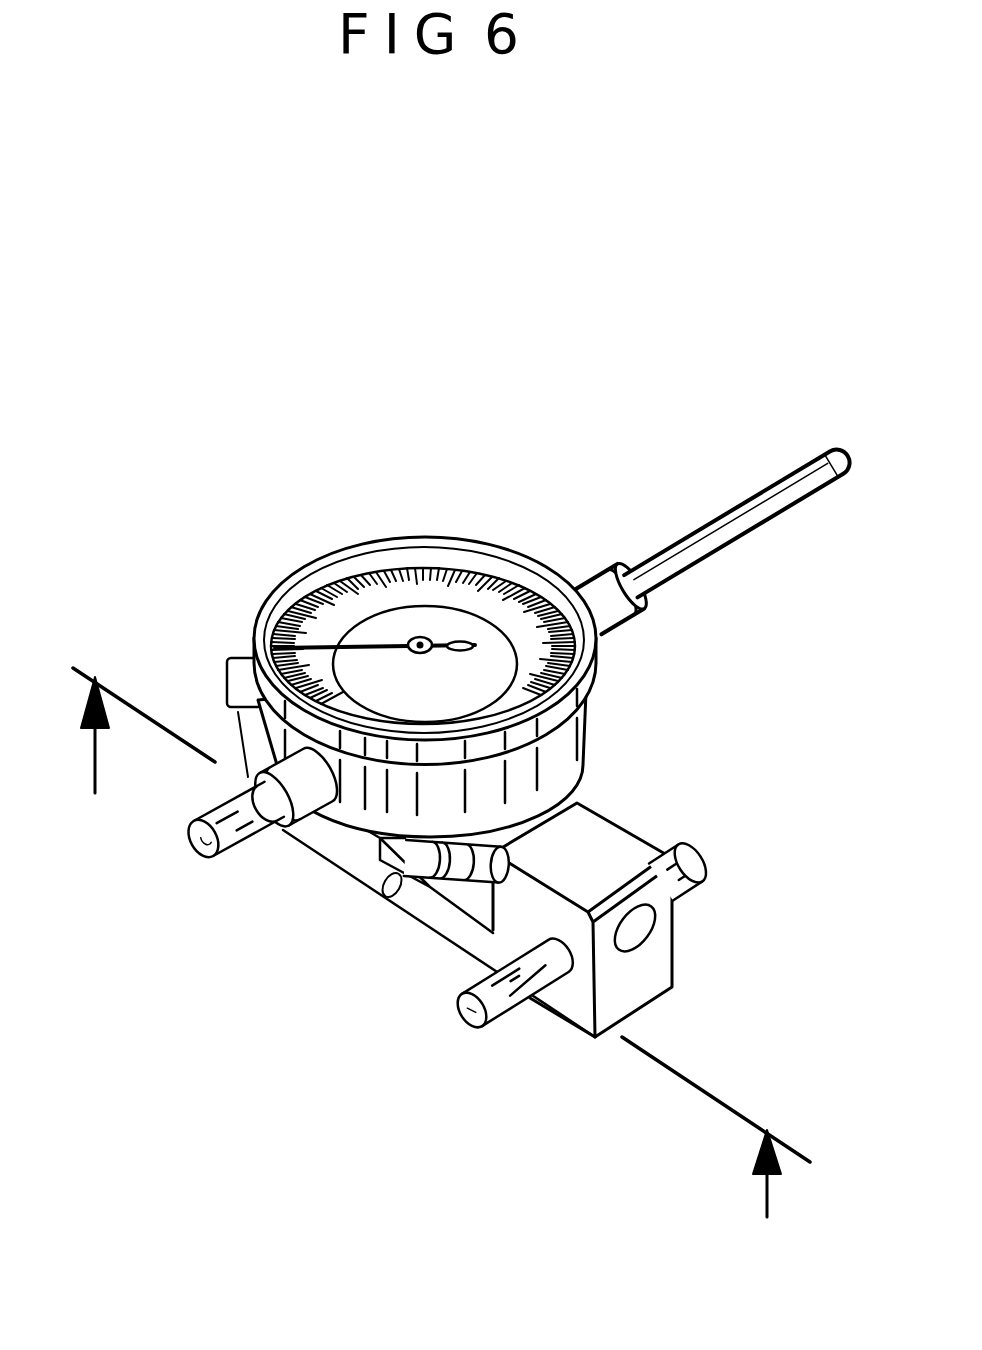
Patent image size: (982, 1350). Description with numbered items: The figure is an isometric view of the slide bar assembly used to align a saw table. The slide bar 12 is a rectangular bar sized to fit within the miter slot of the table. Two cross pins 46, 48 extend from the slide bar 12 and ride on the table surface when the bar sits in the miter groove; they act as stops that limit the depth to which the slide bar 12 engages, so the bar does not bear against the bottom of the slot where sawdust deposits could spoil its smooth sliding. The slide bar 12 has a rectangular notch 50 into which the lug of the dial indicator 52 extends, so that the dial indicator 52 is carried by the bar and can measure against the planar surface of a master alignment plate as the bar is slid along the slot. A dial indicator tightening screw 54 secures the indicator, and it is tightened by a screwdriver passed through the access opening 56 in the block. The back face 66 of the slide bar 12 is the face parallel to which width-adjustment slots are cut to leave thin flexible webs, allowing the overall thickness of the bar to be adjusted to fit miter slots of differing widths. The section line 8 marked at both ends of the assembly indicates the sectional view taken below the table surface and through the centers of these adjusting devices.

The section line 8- 8 is at (441, 977).
The slide bar 12 is at (670, 866).
The cross pin 46 is at (197, 845).
The cross pin 48 is at (497, 1023).
The rectangular notch 50 is at (467, 902).
The dial indicator 52 is at (455, 533).
The dial indicator tightening screw 54 is at (440, 882).
The access opening 56 is at (628, 930).
The back face 66 is at (577, 1010).